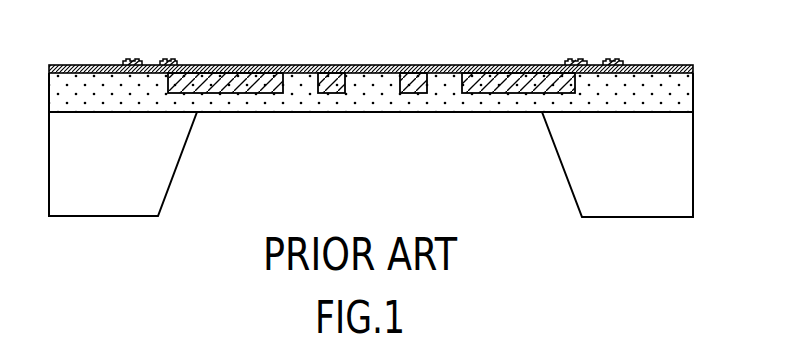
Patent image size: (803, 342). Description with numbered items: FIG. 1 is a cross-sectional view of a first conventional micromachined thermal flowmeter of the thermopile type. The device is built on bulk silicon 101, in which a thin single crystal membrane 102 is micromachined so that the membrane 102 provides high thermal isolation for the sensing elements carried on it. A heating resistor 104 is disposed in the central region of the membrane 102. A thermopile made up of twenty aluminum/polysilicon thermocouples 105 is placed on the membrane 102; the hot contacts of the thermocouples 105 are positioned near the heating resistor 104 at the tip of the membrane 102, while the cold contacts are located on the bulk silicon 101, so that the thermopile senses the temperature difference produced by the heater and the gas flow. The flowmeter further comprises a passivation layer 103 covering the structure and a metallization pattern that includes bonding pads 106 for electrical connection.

The bulk silicon 101 is at (70, 132).
The membrane 102 is at (667, 97).
The passivation layer 103 is at (417, 70).
The heating resistor 104 is at (323, 70).
The thermocouples 105 is at (217, 66).
The bonding pads 106 is at (615, 68).